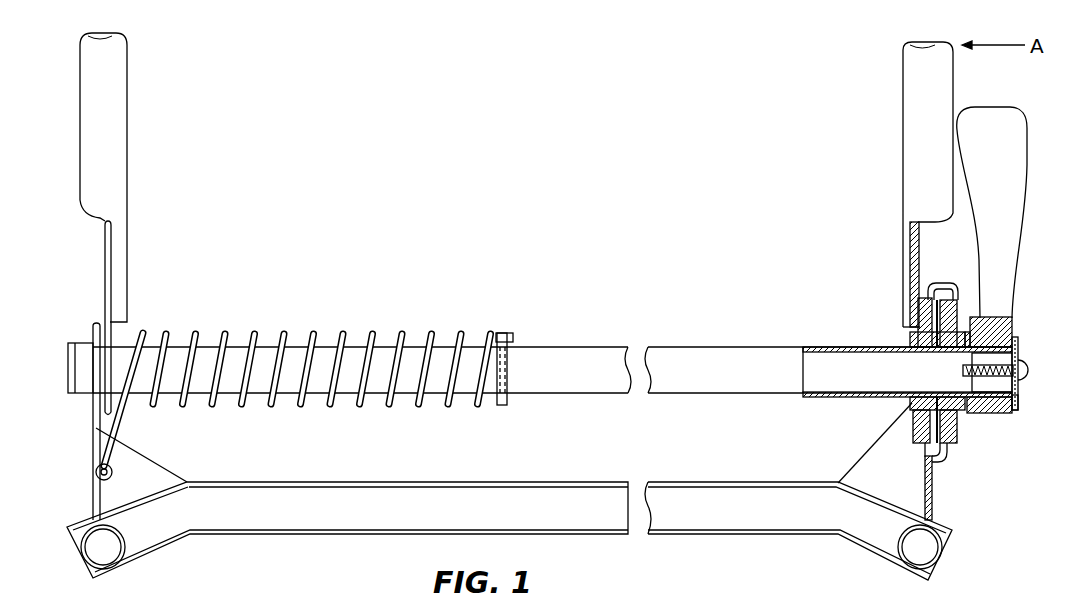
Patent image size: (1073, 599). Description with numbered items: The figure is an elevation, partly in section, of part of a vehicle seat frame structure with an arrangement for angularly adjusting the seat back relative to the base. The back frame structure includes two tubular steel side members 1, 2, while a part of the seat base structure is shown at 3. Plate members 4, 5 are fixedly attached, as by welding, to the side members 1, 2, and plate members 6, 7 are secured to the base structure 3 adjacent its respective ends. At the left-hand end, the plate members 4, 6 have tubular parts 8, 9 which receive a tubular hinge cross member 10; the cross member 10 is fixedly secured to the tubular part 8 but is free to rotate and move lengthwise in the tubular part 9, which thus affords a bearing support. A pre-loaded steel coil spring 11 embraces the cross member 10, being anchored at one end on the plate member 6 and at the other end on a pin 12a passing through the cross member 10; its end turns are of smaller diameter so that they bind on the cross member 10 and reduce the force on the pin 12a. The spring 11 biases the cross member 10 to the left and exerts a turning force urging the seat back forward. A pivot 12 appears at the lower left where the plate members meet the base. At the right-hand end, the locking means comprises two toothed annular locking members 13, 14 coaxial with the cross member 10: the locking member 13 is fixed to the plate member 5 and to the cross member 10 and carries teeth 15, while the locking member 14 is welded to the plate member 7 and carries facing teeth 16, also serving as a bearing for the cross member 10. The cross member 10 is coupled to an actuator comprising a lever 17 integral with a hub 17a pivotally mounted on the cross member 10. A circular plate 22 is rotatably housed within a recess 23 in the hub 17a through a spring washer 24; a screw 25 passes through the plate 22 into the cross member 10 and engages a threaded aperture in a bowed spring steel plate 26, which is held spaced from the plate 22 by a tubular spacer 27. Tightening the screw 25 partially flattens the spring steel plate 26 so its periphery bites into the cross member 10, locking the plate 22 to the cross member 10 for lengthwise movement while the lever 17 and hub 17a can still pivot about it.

The tubular steel side member 1 is at (127, 112).
The tubular steel side member 2 is at (903, 136).
The seat base structure 3 is at (212, 533).
The plate member 4 is at (105, 262).
The plate member 5 is at (920, 256).
The plate member 6 is at (95, 458).
The plate member 7 is at (933, 505).
The tubular part 8 is at (125, 340).
The tubular part 9 is at (85, 343).
The tubular hinge cross member 10 is at (710, 395).
The coil spring 11 is at (300, 400).
The pivot pin 12 is at (112, 472).
The pin 12a is at (503, 333).
The toothed annular locking member 13 is at (910, 403).
The toothed annular locking member 14 is at (950, 428).
The teeth 15 is at (925, 447).
The teeth 16 is at (945, 452).
The lever 17 is at (1015, 138).
The hub 17a is at (1000, 410).
The circular plate 22 is at (1019, 390).
The recess 23 is at (1013, 337).
The spring washer 24 is at (1020, 402).
The screw 25 is at (1024, 368).
The bowed spring steel plate 26 is at (968, 370).
The tubular spacer 27 is at (1010, 333).